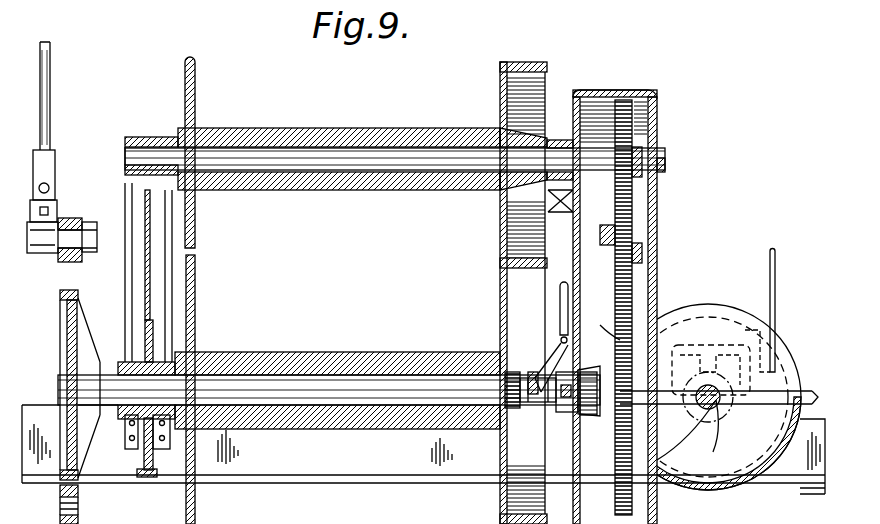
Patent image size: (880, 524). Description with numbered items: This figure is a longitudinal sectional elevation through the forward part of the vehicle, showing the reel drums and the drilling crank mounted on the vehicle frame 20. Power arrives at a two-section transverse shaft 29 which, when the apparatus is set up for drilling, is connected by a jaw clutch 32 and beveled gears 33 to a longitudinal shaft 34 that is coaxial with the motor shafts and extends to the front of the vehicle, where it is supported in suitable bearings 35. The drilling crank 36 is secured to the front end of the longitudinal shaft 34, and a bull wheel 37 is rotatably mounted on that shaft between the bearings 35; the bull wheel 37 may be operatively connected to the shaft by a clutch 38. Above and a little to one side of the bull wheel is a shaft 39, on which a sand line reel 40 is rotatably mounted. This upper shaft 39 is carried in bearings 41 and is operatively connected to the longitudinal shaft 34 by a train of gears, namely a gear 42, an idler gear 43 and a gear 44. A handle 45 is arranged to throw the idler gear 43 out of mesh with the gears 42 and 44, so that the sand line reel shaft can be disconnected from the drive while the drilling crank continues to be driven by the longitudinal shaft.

The vehicle frame 20 is at (300, 493).
The two-section transverse shaft 29 is at (718, 403).
The jaw clutch 32 is at (776, 297).
The beveled gears 33 is at (650, 294).
The longitudinal shaft 34 is at (400, 392).
The bearings 35 is at (133, 418).
The drilling crank 36 is at (62, 333).
The bull wheel 37 is at (240, 360).
The clutch 38 is at (565, 303).
The shaft 39 is at (333, 150).
The sand line reel 40 is at (423, 131).
The bearings 41 is at (155, 137).
The gear 42 is at (630, 126).
The idler gear 43 is at (630, 234).
The gear 44 is at (613, 325).
The handle 45 is at (642, 243).